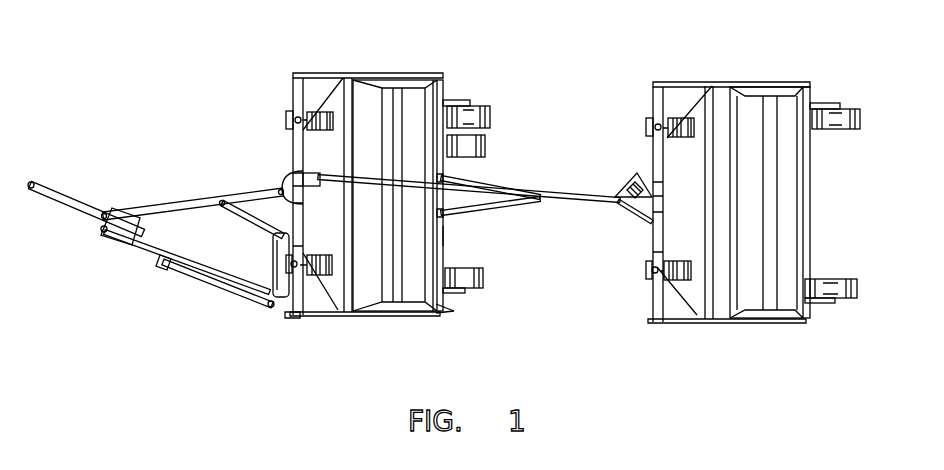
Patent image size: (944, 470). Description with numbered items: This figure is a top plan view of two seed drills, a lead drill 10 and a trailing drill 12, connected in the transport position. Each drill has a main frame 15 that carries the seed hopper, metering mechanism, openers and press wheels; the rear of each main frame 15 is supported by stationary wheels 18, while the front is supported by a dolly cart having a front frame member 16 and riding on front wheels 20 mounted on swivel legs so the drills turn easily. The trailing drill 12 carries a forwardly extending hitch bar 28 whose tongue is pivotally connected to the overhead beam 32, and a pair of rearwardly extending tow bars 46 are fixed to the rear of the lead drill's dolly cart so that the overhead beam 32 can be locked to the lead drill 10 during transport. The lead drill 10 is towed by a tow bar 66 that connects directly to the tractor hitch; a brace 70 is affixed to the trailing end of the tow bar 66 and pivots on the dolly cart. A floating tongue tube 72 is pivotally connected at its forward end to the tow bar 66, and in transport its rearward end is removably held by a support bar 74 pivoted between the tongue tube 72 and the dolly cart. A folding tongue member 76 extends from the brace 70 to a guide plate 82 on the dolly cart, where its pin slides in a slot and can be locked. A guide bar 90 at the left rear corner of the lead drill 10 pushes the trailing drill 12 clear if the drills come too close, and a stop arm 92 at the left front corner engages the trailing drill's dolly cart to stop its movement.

The lead drill 10 is at (362, 70).
The trailing drill 12 is at (740, 78).
The main frame 15 is at (292, 158).
The front frame member 16 is at (293, 88).
The stationary wheels 18 is at (487, 107).
The front wheels 20 is at (288, 116).
The hitch bar 28 is at (573, 196).
The overhead beam 32 is at (408, 198).
The tow bars 46 is at (472, 180).
The tow bar 66 is at (53, 188).
The brace 70 is at (167, 203).
The floating tongue tube 72 is at (133, 250).
The support bar 74 is at (173, 273).
The folding tongue member 76 is at (233, 222).
The guide plate 82 is at (272, 257).
The guide bar 90 is at (450, 310).
The stop arm 92 is at (287, 320).